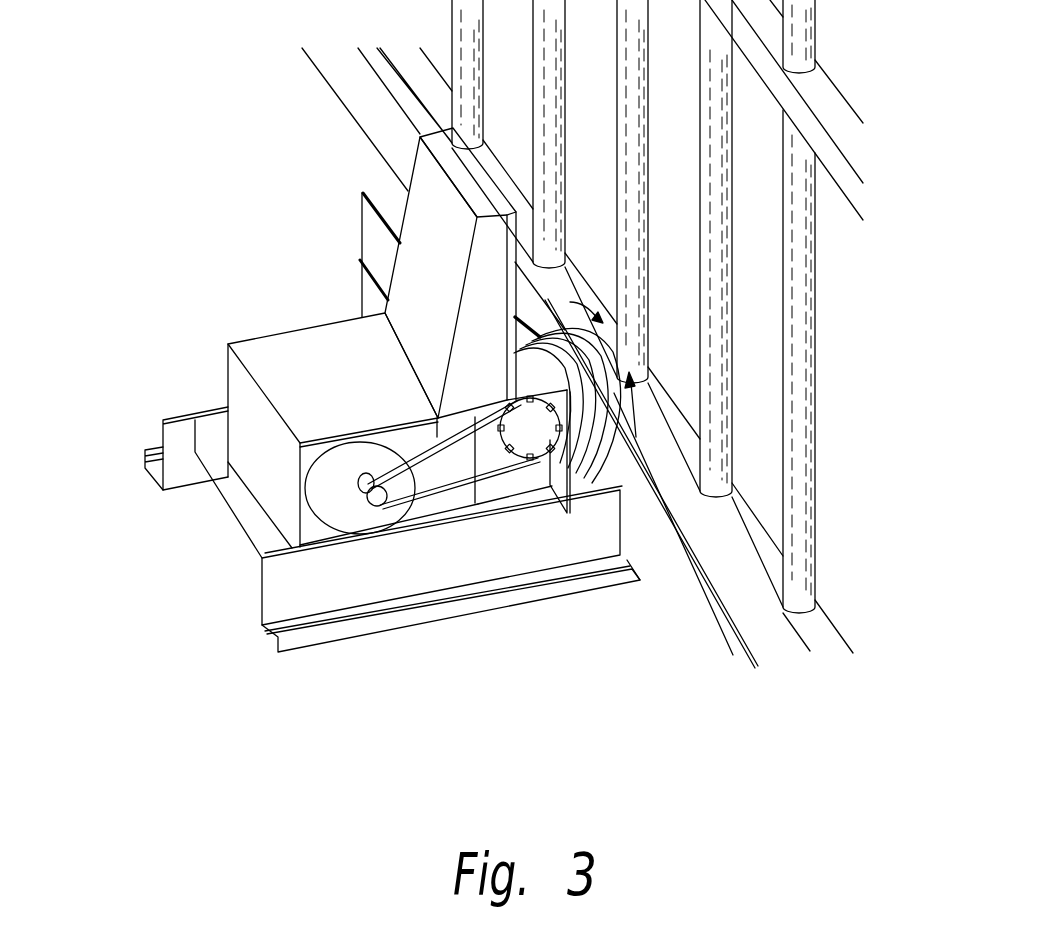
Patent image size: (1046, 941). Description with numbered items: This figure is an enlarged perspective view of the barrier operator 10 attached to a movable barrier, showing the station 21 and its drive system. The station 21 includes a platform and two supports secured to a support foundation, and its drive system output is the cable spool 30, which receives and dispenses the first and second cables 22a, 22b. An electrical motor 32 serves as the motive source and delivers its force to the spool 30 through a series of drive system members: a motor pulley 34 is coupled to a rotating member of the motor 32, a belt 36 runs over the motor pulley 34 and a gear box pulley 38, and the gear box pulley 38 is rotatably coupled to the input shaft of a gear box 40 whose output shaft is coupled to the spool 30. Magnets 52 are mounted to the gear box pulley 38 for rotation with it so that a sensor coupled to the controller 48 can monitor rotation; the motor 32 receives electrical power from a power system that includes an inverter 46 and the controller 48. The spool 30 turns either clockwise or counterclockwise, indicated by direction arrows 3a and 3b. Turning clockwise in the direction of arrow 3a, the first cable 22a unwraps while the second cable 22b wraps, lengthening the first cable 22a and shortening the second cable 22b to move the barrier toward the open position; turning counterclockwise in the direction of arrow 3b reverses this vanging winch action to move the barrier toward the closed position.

The barrier operator 10 is at (167, 255).
The station 21 is at (313, 645).
The first cable 22a is at (387, 88).
The second cable 22b is at (716, 598).
The cable spool 30 is at (530, 313).
The electrical motor 32 is at (332, 493).
The motor pulley 34 is at (381, 506).
The belt 36 is at (450, 470).
The gear box pulley 38 is at (533, 460).
The gear box 40 is at (513, 483).
The inverter 46 is at (398, 226).
The controller 48 is at (423, 186).
The magnets 52 is at (480, 504).
The direction arrow (clockwise) 3a is at (635, 403).
The direction arrow (counterclockwise) 3b is at (590, 312).